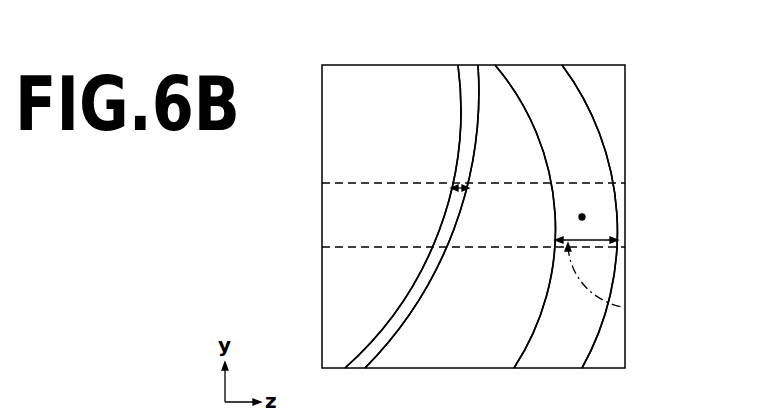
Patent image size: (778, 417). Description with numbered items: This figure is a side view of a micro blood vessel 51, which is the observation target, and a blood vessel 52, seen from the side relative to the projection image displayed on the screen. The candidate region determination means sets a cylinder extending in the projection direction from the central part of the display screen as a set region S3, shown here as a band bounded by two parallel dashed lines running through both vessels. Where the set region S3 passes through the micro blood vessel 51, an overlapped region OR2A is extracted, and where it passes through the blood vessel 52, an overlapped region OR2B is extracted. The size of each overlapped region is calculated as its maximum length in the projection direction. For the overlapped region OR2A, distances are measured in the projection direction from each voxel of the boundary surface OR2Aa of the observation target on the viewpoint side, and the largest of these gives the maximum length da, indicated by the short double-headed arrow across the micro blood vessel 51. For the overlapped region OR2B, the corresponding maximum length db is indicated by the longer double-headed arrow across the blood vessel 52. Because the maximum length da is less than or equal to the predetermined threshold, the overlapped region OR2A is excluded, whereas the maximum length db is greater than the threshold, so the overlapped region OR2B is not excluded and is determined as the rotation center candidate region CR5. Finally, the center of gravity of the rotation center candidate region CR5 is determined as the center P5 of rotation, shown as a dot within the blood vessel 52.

The micro blood vessel 51 is at (468, 70).
The blood vessel 52 is at (538, 72).
The maximum length in the projection direction of the overlapped region OR2A da is at (450, 182).
The boundary surface OR2Aa is at (450, 201).
The overlapped region OR2A is at (445, 237).
The set region S3 is at (620, 183).
The center of rotation P5 is at (585, 217).
The maximum length in the projection direction of the overlapped region OR2B db is at (588, 240).
The overlapped region OR2B is at (590, 245).
The rotation center candidate region CR5 is at (622, 307).